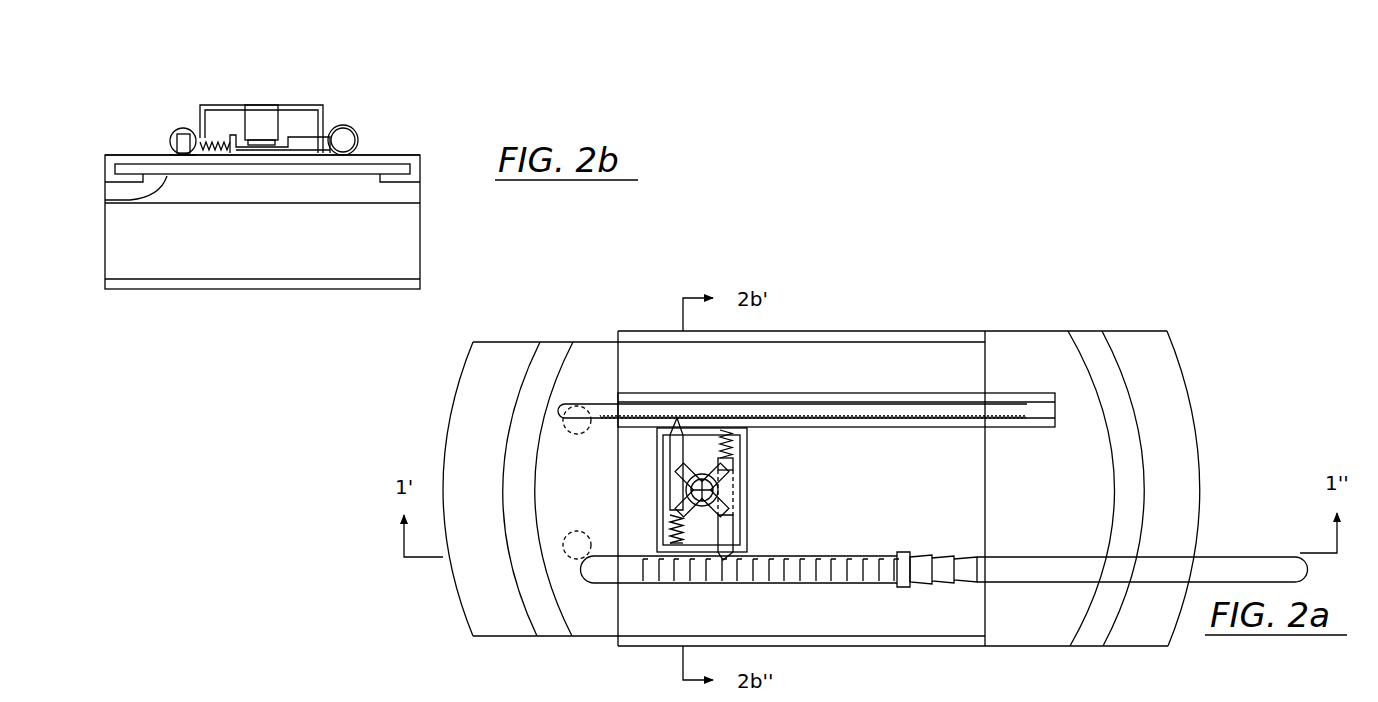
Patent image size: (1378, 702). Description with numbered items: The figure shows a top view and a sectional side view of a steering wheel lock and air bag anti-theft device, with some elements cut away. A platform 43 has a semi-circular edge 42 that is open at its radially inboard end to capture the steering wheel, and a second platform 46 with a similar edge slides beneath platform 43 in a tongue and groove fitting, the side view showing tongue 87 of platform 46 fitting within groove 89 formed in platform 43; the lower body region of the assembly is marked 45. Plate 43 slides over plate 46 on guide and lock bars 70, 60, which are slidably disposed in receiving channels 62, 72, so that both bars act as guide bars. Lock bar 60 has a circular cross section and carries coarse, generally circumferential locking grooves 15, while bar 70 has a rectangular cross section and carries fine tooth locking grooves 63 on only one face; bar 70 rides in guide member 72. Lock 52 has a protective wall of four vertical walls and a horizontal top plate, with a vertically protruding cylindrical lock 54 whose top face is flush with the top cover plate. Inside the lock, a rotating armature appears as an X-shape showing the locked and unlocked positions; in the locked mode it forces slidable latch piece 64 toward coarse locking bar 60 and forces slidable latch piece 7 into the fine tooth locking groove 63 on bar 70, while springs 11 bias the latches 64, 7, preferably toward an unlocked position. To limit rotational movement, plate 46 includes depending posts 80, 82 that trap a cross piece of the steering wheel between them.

In FIG. 2A, the slidable latch piece 7 is at (657, 450).
In FIG. 2A, the springs 11 is at (670, 530).
In FIG. 2A, the locking grooves 15 is at (937, 555).
In FIG. 2B, the semi-circular edge 42 is at (420, 217).
In FIG. 2B, the platform 43 is at (420, 155).
In FIG. 2A, the platform 43 is at (1120, 329).
In FIG. 2B, the base 45 is at (420, 247).
In FIG. 2B, the second platform 46 is at (105, 200).
In FIG. 2A, the second platform 46 is at (558, 340).
In FIG. 2B, the lock 52 is at (330, 106).
In FIG. 2A, the lock 52 is at (752, 447).
In FIG. 2B, the cylindrical lock 54 is at (272, 120).
In FIG. 2A, the cylindrical lock 54 is at (713, 482).
In FIG. 2B, the lock bar 60 is at (353, 129).
In FIG. 2A, the lock bar 60 is at (985, 557).
In FIG. 2B, the receiving channel 62 is at (358, 145).
In FIG. 2A, the receiving channel 62 is at (833, 556).
In FIG. 2A, the locking grooves 63 is at (853, 420).
In FIG. 2A, the lock piece 64 is at (733, 530).
In FIG. 2B, the bar 70 is at (171, 137).
In FIG. 2A, the bar 70 is at (876, 402).
In FIG. 2B, the guide member 72 is at (177, 130).
In FIG. 2A, the guide member 72 is at (910, 393).
In FIG. 2A, the depending post 80 is at (575, 560).
In FIG. 2A, the depending post 82 is at (573, 404).
In FIG. 2B, the tongue 87 is at (410, 168).
In FIG. 2B, the groove 89 is at (405, 180).